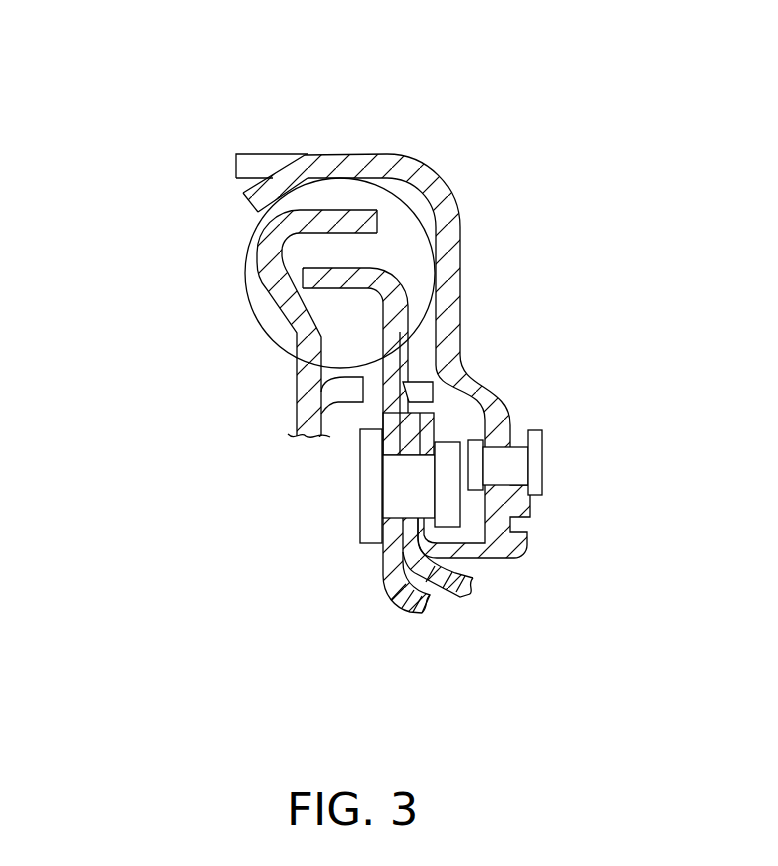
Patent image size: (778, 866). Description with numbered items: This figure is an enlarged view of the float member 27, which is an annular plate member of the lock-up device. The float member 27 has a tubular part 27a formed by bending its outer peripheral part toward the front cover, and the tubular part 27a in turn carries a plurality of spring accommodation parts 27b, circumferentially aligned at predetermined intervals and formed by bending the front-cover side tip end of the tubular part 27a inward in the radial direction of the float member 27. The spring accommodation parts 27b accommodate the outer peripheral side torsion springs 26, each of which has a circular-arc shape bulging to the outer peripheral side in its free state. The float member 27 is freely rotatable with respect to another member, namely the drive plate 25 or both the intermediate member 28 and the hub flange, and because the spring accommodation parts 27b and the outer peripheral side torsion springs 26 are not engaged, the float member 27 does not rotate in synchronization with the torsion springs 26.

The drive plate 25 is at (298, 418).
The outer peripheral side torsion spring 26 is at (277, 327).
The float member 27 is at (479, 156).
The tubular part 27a is at (250, 162).
The spring accommodation part 27b is at (257, 202).
The intermediate member 28 is at (388, 611).